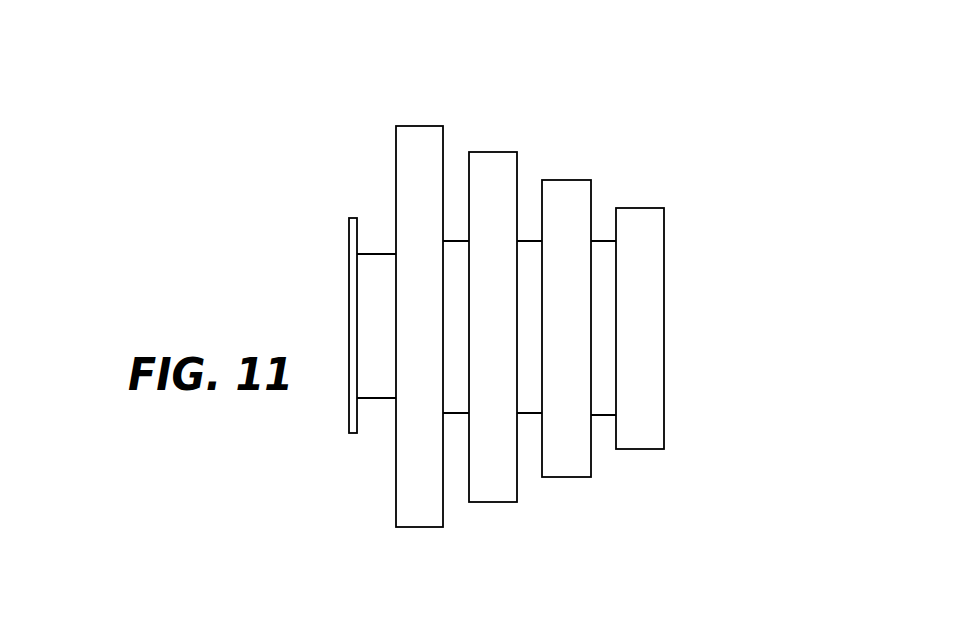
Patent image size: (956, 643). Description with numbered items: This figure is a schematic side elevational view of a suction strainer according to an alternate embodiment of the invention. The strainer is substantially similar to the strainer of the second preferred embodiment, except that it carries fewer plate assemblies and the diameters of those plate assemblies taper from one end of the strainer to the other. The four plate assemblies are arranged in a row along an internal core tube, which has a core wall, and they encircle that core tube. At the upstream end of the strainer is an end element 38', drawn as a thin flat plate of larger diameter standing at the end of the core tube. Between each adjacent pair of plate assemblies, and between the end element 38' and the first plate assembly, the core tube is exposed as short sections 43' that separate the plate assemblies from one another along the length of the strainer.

The end flange 38' is at (317, 324).
The spacer 43' is at (538, 407).